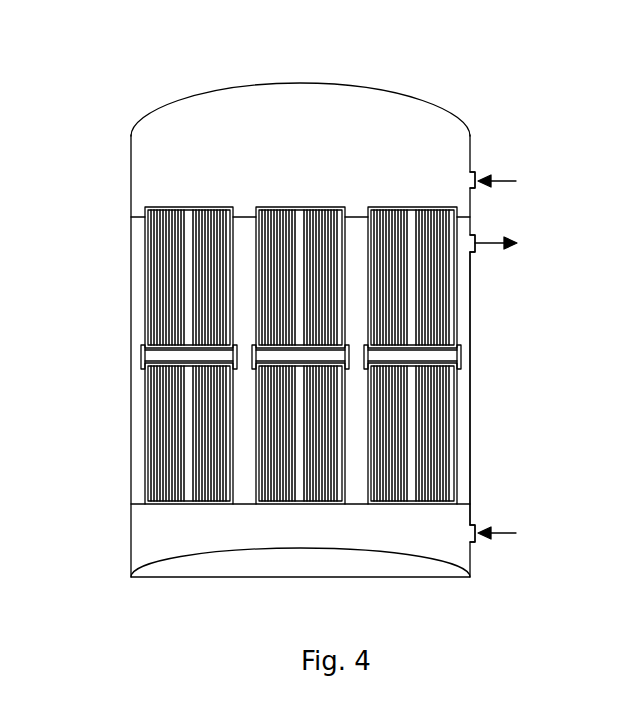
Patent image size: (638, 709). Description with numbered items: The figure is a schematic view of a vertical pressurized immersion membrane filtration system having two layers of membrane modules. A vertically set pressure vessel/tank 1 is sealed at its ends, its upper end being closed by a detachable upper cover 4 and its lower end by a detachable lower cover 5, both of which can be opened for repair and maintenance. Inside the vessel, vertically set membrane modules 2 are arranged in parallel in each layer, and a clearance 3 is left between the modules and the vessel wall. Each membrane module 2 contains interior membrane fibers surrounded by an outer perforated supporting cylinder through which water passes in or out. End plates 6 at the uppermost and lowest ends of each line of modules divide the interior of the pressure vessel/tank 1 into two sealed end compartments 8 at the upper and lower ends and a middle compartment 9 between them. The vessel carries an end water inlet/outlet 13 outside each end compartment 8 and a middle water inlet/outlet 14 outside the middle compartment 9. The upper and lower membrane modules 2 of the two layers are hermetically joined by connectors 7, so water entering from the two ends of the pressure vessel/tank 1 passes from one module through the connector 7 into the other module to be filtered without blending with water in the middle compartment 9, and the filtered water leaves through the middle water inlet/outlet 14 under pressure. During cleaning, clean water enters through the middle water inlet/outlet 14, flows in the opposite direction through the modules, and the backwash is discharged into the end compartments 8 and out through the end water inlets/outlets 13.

The pressure vessel/tank 1 is at (131, 180).
The membrane module 2 is at (180, 258).
The clearance 3 is at (143, 280).
The upper cover 4 is at (300, 83).
The lower cover 5 is at (433, 570).
The end plate 6 is at (131, 209).
The connector 7 is at (143, 358).
The end compartment 8 is at (360, 137).
The middle compartment 9 is at (464, 422).
The end water inlet/outlet 13 is at (476, 172).
The middle water inlet/outlet 14 is at (476, 235).